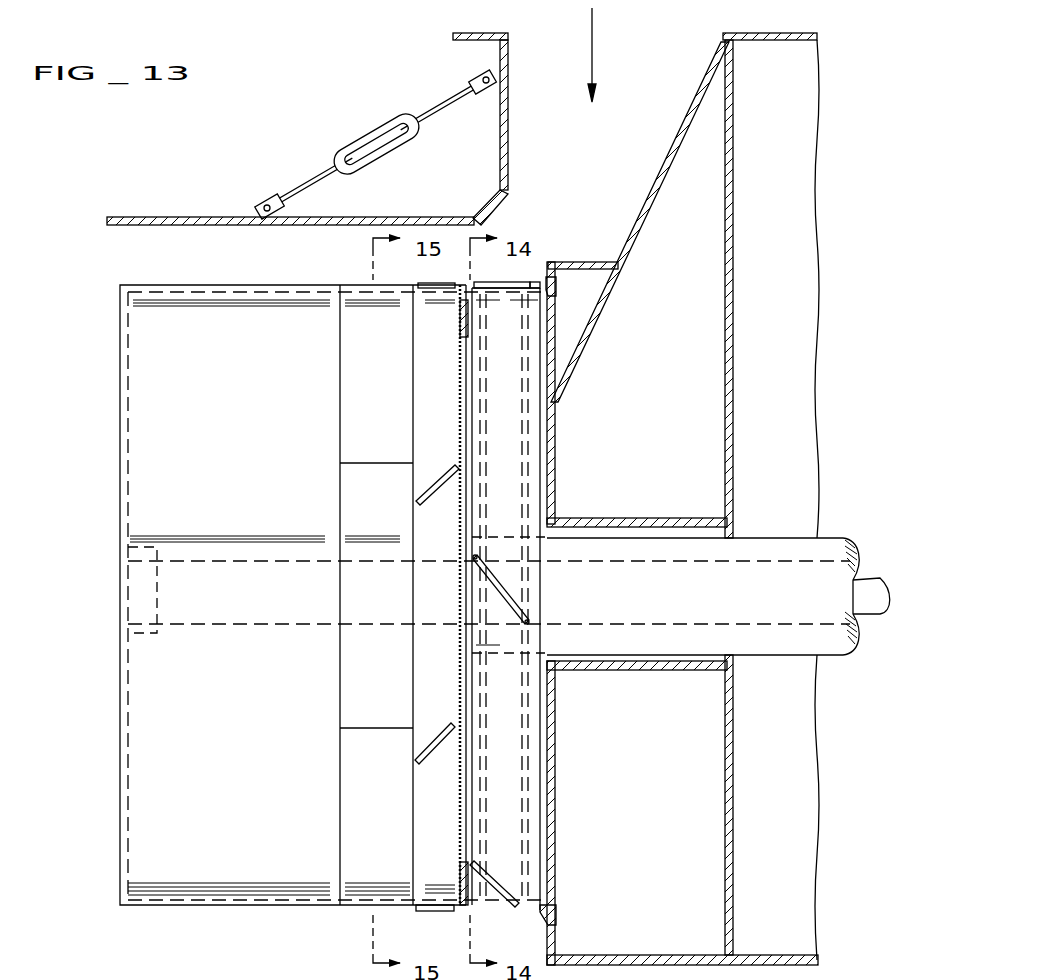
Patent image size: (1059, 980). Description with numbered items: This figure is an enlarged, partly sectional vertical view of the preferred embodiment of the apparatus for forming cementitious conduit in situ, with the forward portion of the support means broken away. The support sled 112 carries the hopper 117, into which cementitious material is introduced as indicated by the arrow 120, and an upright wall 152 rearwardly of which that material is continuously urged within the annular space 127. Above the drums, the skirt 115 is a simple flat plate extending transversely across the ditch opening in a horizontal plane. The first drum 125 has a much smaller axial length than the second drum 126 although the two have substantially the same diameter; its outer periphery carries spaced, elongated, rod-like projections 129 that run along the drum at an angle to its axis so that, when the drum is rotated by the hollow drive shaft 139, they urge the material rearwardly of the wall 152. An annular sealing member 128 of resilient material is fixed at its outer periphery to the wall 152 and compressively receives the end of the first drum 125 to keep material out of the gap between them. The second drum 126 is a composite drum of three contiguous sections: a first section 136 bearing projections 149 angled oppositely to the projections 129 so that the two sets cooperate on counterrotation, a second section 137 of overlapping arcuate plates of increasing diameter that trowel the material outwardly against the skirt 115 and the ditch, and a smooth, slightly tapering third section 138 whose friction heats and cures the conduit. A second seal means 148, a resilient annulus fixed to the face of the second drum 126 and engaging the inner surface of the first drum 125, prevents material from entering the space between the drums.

The support sled 112 is at (755, 60).
The skirt 115 is at (200, 217).
The hopper 117 is at (548, 65).
The arrow 120 is at (596, 55).
The first drum 125 is at (505, 410).
The second drum 126 is at (150, 476).
The annular space 127 is at (150, 266).
The annular sealing member 128 is at (553, 289).
The rod-like projections 129 is at (518, 278).
The first section 136 is at (425, 535).
The second section 137 is at (350, 688).
The third section 138 is at (145, 713).
The hollow drive shaft 139 is at (752, 568).
The second seal means 148 is at (458, 317).
The projections 149 is at (433, 287).
The upright wall 152 is at (556, 320).